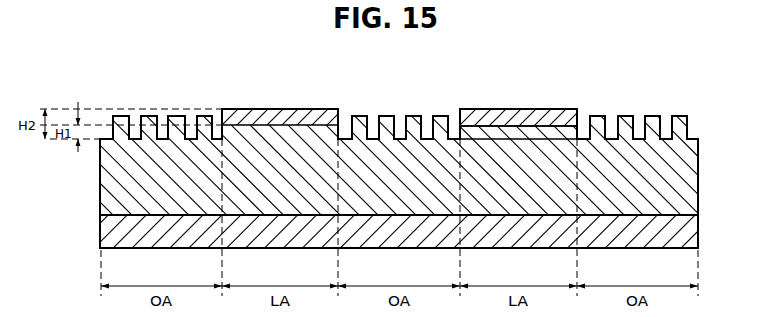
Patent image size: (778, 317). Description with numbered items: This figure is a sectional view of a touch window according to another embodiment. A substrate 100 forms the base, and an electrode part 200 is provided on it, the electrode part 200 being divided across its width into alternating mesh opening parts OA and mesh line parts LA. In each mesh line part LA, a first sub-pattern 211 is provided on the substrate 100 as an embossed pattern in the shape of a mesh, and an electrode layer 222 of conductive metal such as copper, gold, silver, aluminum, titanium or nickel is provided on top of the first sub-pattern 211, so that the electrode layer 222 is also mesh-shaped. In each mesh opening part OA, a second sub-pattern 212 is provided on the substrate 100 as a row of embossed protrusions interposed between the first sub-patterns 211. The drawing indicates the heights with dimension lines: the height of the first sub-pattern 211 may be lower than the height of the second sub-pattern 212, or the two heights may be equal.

The substrate 100 is at (698, 230).
The electrode part 200 is at (698, 180).
The first sub-pattern 211 is at (566, 132).
The second sub-pattern 212 is at (677, 123).
The electrode layer 222 is at (512, 113).